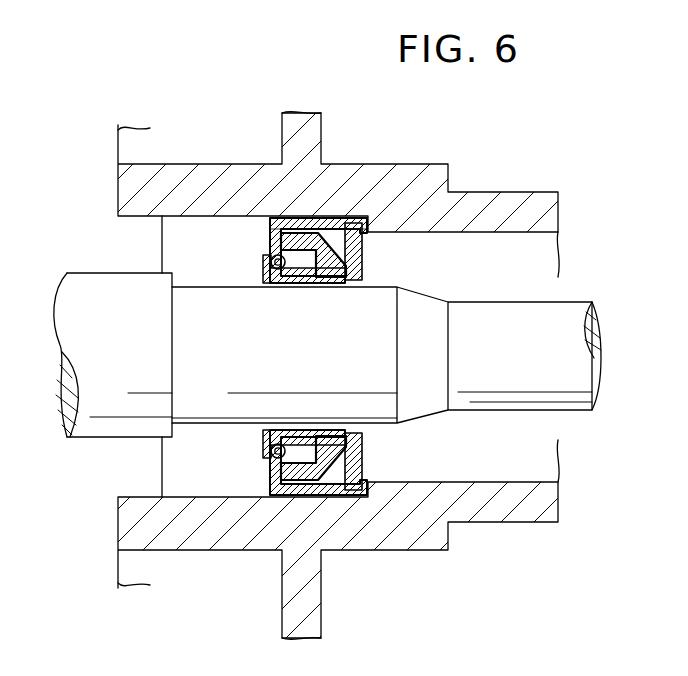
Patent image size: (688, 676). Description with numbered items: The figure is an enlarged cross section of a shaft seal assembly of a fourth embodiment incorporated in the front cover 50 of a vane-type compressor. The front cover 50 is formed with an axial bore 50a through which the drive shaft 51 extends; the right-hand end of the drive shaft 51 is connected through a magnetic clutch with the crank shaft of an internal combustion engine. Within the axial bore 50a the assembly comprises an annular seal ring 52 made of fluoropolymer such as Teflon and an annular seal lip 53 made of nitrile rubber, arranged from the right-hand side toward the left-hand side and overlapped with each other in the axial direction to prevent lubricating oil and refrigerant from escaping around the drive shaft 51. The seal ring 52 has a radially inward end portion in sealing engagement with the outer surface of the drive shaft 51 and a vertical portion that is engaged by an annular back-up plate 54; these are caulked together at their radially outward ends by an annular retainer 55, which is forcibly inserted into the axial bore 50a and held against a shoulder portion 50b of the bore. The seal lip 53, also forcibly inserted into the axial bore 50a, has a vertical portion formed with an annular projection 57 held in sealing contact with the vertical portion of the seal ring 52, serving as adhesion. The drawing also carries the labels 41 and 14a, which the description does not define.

The front cover 50 is at (394, 164).
The axial bore 50a is at (465, 234).
The shoulder portion 50b is at (368, 238).
The drive shaft 51 is at (567, 305).
The annular seal ring 52 is at (309, 254).
The annular seal lip 53 is at (262, 270).
The annular back-up plate 54 is at (362, 272).
The annular retainer 55 is at (355, 217).
The annular projection 57 is at (314, 462).
The retainer ring 41 is at (356, 466).
The housing flange portion 14a is at (199, 497).